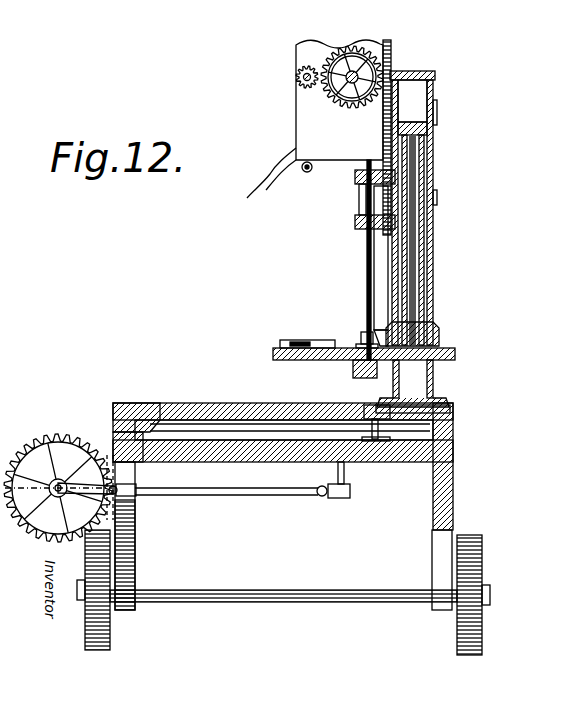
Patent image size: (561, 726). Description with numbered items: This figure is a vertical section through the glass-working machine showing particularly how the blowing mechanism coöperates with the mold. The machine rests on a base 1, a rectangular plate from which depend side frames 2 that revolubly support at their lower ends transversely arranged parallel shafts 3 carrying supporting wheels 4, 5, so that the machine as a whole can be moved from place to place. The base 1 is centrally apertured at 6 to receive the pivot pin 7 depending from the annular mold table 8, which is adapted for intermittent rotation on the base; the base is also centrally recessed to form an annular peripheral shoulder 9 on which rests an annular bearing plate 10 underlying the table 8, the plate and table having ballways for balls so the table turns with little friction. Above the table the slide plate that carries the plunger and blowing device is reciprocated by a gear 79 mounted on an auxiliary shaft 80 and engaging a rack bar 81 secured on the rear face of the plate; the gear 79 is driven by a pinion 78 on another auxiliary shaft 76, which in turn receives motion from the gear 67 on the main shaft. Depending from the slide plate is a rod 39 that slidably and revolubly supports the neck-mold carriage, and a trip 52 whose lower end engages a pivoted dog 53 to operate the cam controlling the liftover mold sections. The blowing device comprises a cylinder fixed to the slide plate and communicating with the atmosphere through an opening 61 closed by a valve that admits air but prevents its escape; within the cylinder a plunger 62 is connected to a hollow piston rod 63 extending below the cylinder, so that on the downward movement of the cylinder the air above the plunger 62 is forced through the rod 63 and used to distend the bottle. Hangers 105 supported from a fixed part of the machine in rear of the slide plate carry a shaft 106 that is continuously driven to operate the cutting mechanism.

The base 1 is at (283, 445).
The side frames 2 is at (432, 504).
The shafts 3 is at (283, 592).
The supporting wheels 4 is at (110, 620).
The wheel 5 is at (483, 623).
The central aperture 6 is at (331, 486).
The pivot pin 7 is at (337, 470).
The mold table 8 is at (285, 413).
The annular peripheral shoulder 9 is at (166, 448).
The annular bearing plate 10 is at (138, 420).
The rod 39 is at (366, 266).
The trip 52 is at (390, 258).
The dog 53 is at (373, 335).
The atmospheric opening 61 is at (412, 73).
The plunger 62 is at (421, 129).
The hollow piston rod 63 is at (424, 168).
The gear 67 is at (426, 340).
The auxiliary shaft 76 is at (298, 77).
The pinion 78 is at (303, 84).
The gear 79 is at (315, 119).
The auxiliary shaft 80 is at (356, 72).
The rack bar 81 is at (394, 54).
The hangers 105 is at (350, 180).
The shaft 106 is at (301, 172).